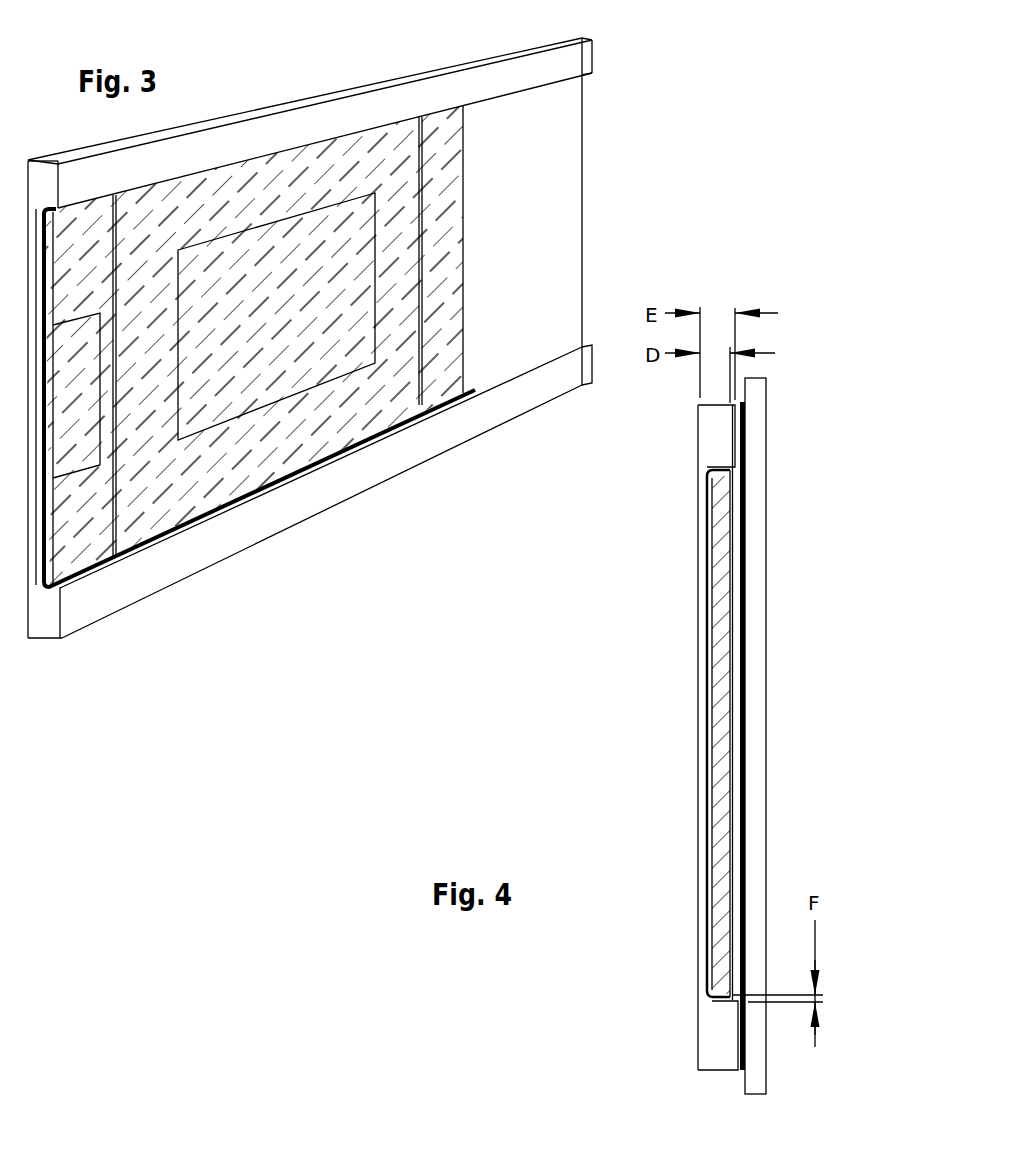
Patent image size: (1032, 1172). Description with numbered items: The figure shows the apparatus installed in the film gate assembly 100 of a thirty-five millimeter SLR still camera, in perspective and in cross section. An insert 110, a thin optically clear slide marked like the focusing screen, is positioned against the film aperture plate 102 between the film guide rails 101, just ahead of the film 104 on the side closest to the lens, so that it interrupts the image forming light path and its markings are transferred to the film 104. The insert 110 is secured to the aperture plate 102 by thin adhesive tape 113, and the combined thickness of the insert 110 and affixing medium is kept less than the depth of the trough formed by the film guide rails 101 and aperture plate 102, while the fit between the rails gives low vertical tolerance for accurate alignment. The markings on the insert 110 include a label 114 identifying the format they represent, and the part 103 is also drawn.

In FIG. 4, the film gate assembly 100 is at (704, 690).
In FIG. 3, the film guide rails 101 is at (47, 618).
In FIG. 4, the film guide rails 101 is at (712, 438).
In FIG. 3, the film aperture plate 102 is at (53, 412).
In FIG. 4, the film aperture plate 102 is at (703, 781).
In FIG. 4, the rear panel 103 is at (752, 437).
In FIG. 4, the film 104 is at (743, 402).
In FIG. 3, the insert 110 is at (55, 265).
In FIG. 4, the insert 110 is at (715, 548).
In FIG. 3, the thin adhesive tape 113 is at (32, 437).
In FIG. 4, the thin adhesive tape 113 is at (730, 717).
In FIG. 3, the labels 114 is at (373, 392).